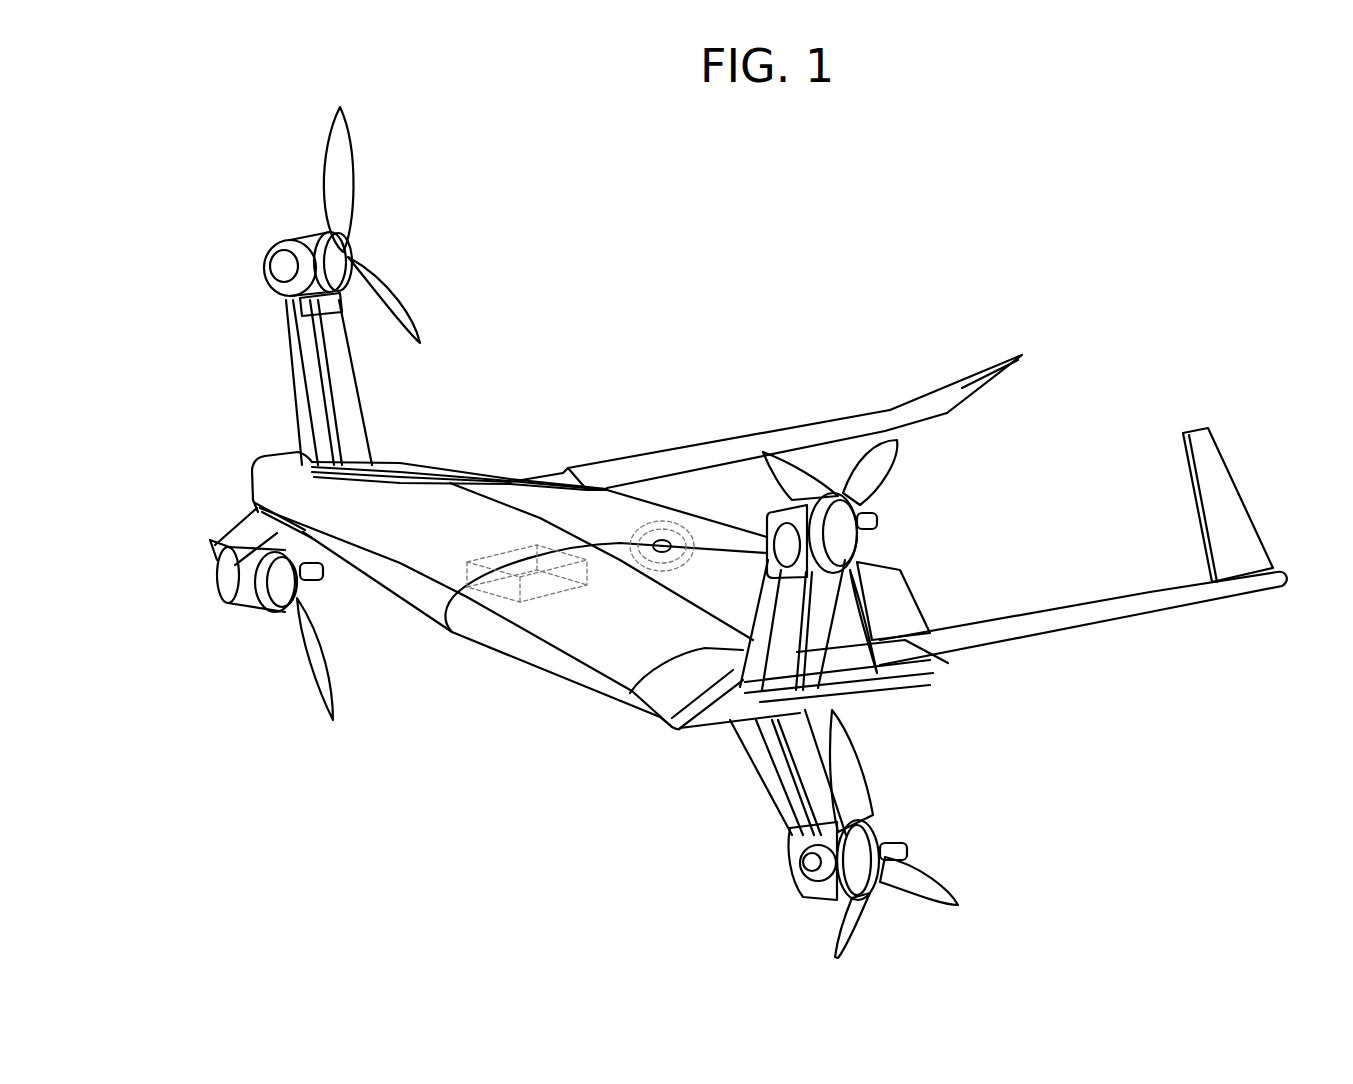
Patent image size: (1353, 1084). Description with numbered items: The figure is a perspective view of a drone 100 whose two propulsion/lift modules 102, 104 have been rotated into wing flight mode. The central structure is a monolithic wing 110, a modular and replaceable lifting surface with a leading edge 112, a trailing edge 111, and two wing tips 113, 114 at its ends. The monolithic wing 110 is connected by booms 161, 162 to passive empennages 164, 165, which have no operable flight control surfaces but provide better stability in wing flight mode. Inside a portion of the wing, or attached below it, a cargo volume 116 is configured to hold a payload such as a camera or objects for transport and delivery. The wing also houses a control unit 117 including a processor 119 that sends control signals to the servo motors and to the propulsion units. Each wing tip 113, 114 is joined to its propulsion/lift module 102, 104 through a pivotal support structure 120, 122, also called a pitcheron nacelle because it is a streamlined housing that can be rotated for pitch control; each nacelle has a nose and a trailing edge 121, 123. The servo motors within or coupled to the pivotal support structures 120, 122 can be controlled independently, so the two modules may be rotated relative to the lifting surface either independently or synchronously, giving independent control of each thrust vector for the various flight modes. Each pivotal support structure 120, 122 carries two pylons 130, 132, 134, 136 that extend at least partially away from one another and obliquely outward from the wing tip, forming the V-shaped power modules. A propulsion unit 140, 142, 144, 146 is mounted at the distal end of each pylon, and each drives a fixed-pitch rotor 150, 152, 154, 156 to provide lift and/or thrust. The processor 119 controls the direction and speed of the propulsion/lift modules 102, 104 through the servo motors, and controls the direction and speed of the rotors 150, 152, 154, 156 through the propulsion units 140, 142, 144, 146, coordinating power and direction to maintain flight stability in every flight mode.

The drone 100 is at (1170, 238).
The propulsion/lift module 102 is at (735, 808).
The propulsion/lift module 104 is at (266, 448).
The monolithic wing 110 is at (563, 500).
The trailing edge 111 is at (913, 600).
The leading edge 112 is at (463, 592).
The wing tip 113 is at (640, 730).
The wing tip 114 is at (248, 510).
The cargo volume 116 is at (583, 557).
The control unit 117 is at (687, 527).
The processor 119 is at (635, 573).
The pivotal support structure 120 is at (707, 707).
The trailing edge 121 is at (923, 685).
The pivotal support structure 122 is at (263, 480).
The trailing edge 123 is at (506, 456).
The pylon 130 is at (753, 770).
The pylon 132 is at (790, 623).
The pylon 134 is at (300, 540).
The pylon 136 is at (350, 440).
The propulsion unit 140 is at (860, 860).
The propulsion unit 142 is at (827, 557).
The propulsion unit 144 is at (307, 560).
The propulsion unit 146 is at (332, 268).
The fixed-pitch rotor 150 is at (940, 877).
The fixed-pitch rotor 152 is at (863, 477).
The fixed-pitch rotor 154 is at (317, 683).
The fixed-pitch rotor 156 is at (418, 330).
The boom 161 is at (1157, 600).
The boom 162 is at (845, 422).
The empennage 164 is at (1220, 518).
The empennage 165 is at (960, 388).